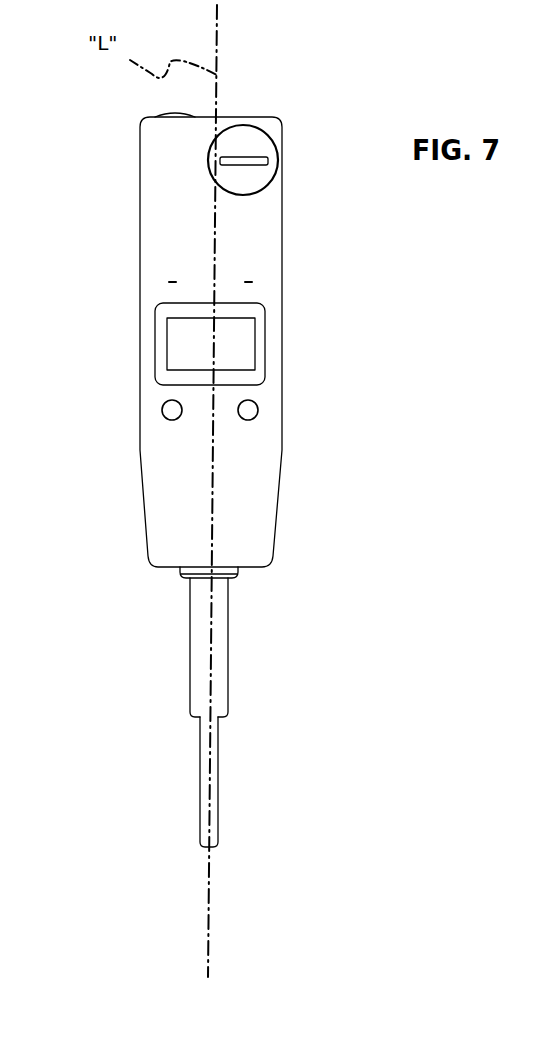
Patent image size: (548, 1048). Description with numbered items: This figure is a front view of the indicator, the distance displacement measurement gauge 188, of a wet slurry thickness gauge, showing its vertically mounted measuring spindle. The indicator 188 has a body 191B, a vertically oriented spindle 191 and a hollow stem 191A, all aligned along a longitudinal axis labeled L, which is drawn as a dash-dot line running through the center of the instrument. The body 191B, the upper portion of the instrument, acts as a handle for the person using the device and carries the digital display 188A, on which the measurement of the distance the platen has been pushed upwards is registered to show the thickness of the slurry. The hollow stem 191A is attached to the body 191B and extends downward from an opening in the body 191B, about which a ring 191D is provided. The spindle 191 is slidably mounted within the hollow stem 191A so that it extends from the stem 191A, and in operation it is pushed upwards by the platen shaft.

The distance displacement measurement gauge 188 is at (310, 420).
The digital display 188A is at (235, 348).
The body 191B is at (262, 515).
The ring 191D is at (185, 578).
The hollow stem 191A is at (222, 690).
The spindle 191 is at (215, 823).